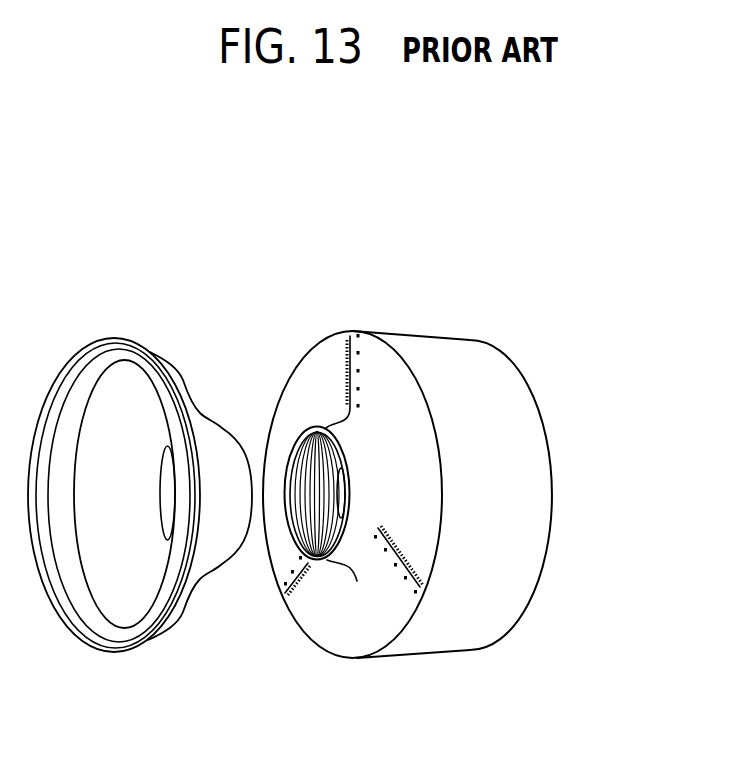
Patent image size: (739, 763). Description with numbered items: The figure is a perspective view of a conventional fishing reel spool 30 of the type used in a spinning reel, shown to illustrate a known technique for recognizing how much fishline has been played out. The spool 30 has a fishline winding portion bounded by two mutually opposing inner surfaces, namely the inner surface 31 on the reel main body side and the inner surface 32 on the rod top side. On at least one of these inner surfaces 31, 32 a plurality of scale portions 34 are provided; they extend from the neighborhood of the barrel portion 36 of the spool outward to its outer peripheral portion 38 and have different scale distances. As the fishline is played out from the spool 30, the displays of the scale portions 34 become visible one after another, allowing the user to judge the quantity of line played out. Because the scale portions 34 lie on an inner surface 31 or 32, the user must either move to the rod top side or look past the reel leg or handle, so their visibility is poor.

The spool 30 is at (140, 514).
The inner surface on the reel main body side 31 is at (407, 486).
The inner surface on the rod top side 32 is at (110, 345).
The scale portions 34 is at (340, 315).
The barrel portion 36 is at (215, 423).
The outer peripheral portion 38 is at (331, 659).